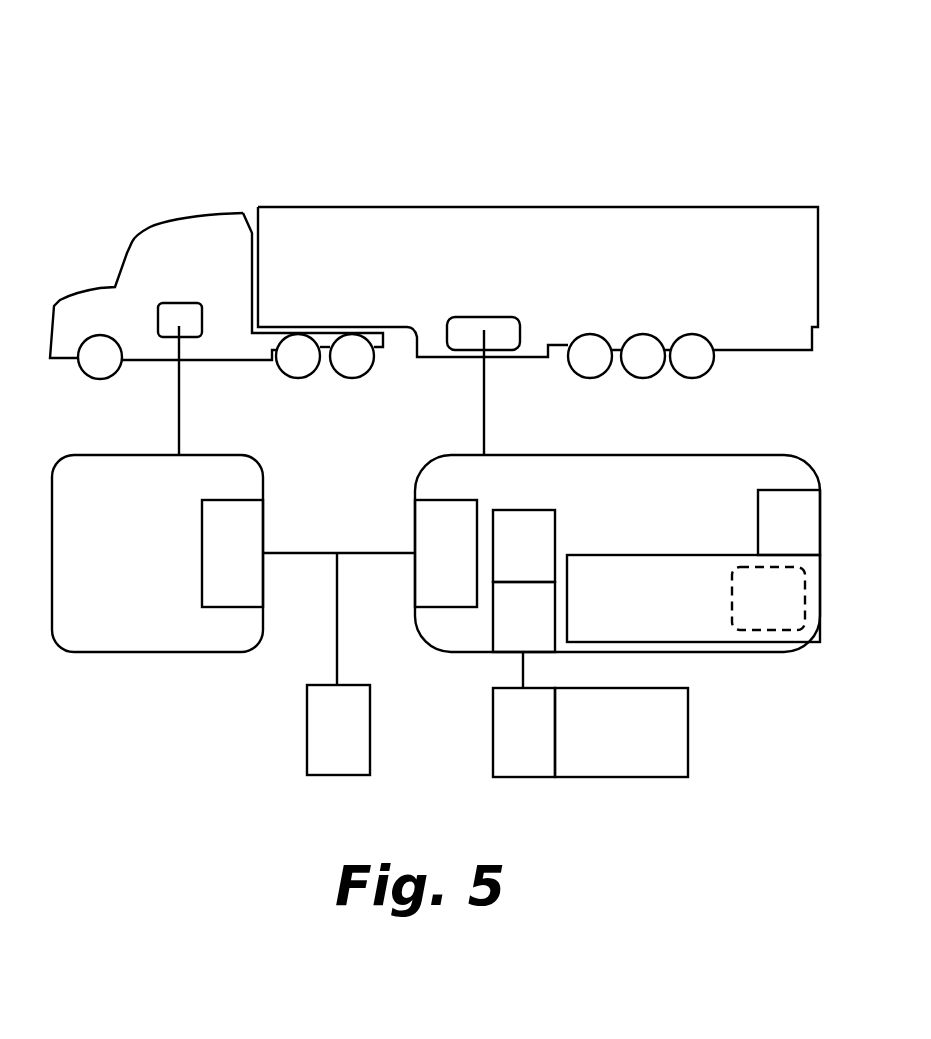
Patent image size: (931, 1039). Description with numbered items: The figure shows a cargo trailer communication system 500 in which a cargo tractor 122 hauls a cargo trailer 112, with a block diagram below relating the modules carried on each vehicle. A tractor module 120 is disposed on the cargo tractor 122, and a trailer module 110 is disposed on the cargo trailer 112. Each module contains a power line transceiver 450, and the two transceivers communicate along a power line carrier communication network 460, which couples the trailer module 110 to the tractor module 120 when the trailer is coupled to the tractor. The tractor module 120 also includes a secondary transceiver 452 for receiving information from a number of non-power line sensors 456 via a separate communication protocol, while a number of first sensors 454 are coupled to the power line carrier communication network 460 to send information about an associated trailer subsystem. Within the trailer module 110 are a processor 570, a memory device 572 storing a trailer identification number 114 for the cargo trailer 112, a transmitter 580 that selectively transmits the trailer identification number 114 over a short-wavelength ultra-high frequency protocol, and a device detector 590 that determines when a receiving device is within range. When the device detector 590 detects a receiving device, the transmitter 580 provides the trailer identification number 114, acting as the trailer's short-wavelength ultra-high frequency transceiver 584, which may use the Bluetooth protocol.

The cargo trailer communication system 500 is at (332, 124).
The cargo tractor 122 is at (159, 286).
The cargo trailer 112 is at (457, 282).
The tractor module 120 is at (156, 566).
The power line transceiver 450 is at (254, 566).
The power line carrier communication network 460 is at (335, 538).
The trailer module 110 is at (674, 522).
The device detector 590 is at (548, 559).
The secondary transceiver 452 is at (548, 631).
The processor 570 is at (811, 537).
The memory device 572 is at (716, 612).
The trailer identification number 114 is at (794, 612).
The first sensors 454 is at (360, 742).
The transmitter 580 is at (546, 746).
The non-power line sensors 456 is at (613, 746).
The short-wavelength ultra-high frequency transceiver 584 is at (505, 670).